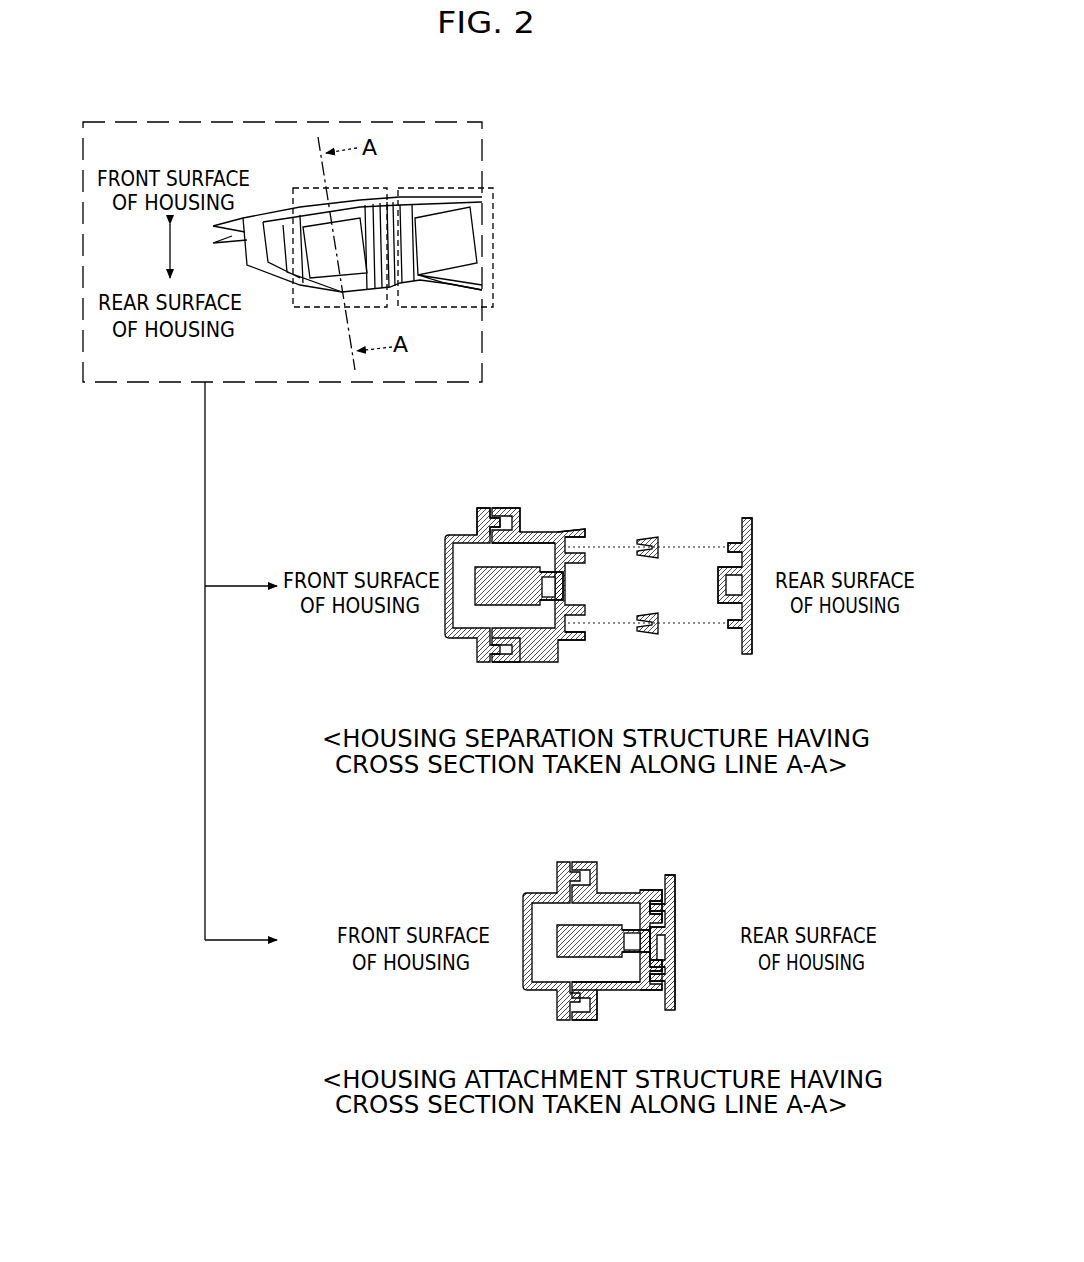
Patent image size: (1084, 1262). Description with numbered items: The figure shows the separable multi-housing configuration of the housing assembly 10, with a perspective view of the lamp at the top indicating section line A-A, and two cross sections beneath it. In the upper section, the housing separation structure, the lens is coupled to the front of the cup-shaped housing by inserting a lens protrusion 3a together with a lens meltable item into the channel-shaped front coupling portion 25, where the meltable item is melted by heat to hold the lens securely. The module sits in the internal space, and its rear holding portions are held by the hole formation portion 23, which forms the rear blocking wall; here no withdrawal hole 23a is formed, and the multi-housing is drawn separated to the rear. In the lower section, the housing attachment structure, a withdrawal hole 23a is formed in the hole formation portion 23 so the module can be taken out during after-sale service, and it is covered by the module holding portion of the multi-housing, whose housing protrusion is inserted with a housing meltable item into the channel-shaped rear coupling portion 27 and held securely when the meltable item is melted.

The lens protrusion 3a is at (482, 520).
The housing assembly 10 is at (293, 190).
The hole formation portion 23 is at (648, 900).
The withdrawal hole 23a is at (625, 905).
The front coupling portion 25 is at (505, 508).
The rear coupling portion 27 is at (575, 533).